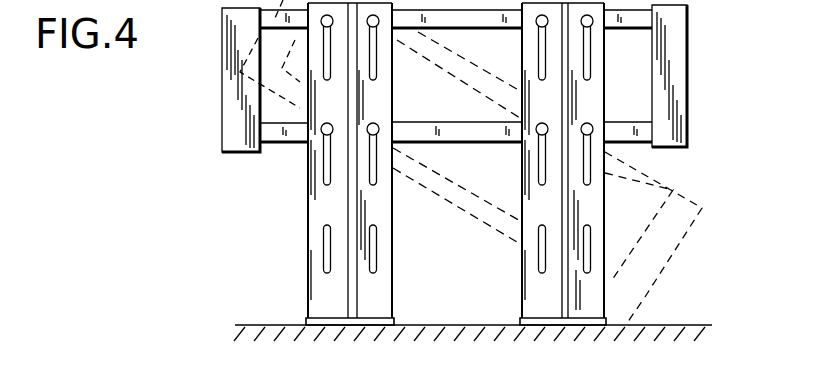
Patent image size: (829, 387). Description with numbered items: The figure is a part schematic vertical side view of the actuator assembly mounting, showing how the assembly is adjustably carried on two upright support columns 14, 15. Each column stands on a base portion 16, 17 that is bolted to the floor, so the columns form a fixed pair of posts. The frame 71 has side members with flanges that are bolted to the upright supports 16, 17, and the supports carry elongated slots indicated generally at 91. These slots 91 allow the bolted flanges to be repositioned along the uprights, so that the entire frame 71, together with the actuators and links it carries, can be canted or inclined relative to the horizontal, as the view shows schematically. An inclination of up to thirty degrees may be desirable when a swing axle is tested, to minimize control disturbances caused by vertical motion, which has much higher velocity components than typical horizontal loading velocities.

The upright support column 14 is at (306, 279).
The upright support column 15 is at (616, 283).
The base portion 16 is at (341, 318).
The base portion 17 is at (538, 318).
The frame 71 is at (232, 133).
The elongated slots 91 is at (325, 178).